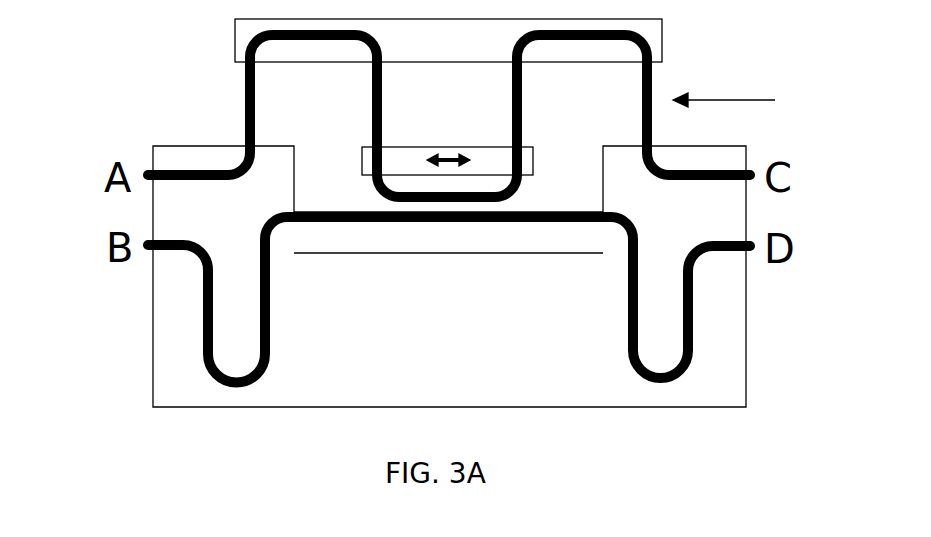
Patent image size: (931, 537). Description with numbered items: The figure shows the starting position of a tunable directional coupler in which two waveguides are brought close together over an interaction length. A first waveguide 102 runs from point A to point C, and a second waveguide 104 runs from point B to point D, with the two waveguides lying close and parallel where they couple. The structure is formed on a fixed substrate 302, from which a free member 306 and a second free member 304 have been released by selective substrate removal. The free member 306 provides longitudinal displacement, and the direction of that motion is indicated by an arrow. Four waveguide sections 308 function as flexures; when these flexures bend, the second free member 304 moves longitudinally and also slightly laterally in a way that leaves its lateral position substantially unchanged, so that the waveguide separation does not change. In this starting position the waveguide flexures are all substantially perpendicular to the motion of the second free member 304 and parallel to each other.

The first waveguide 102 is at (247, 110).
The second waveguide 104 is at (203, 328).
The fixed substrate 302 is at (468, 340).
The second free member 304 is at (469, 50).
The free member 306 is at (446, 151).
The waveguide sections 308 is at (753, 102).